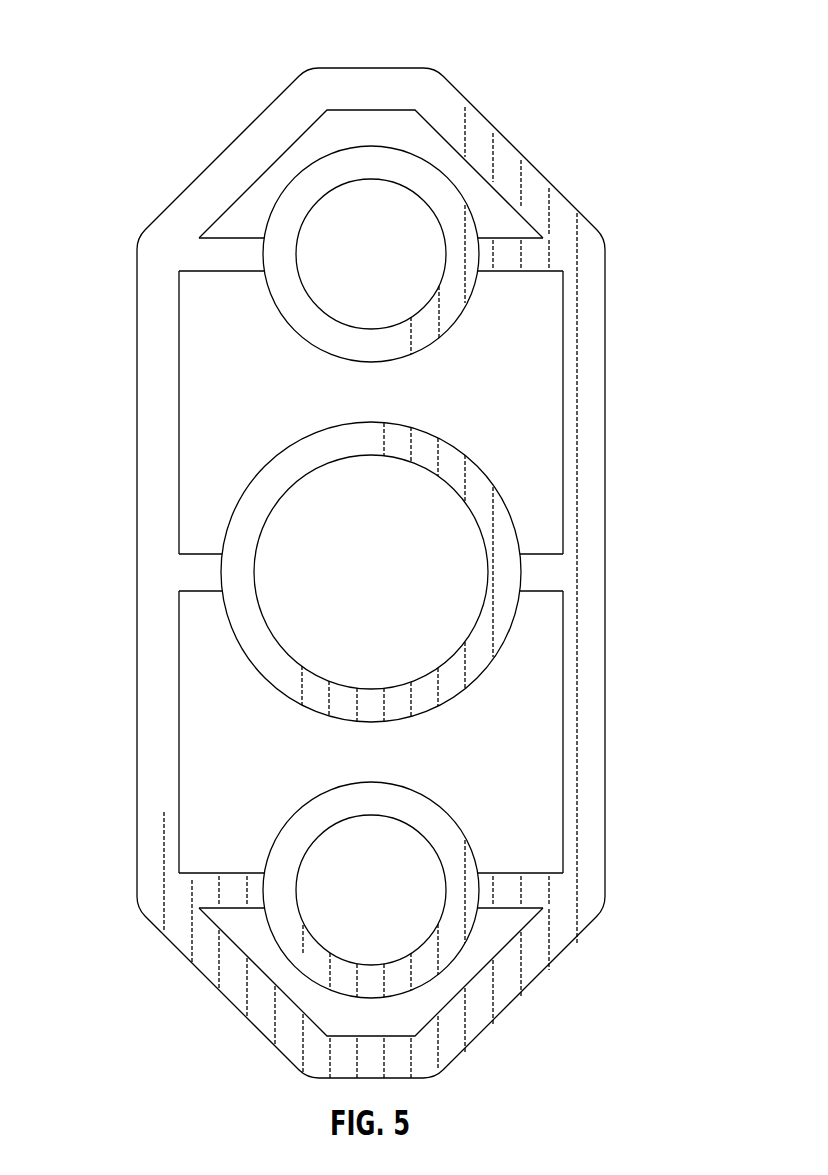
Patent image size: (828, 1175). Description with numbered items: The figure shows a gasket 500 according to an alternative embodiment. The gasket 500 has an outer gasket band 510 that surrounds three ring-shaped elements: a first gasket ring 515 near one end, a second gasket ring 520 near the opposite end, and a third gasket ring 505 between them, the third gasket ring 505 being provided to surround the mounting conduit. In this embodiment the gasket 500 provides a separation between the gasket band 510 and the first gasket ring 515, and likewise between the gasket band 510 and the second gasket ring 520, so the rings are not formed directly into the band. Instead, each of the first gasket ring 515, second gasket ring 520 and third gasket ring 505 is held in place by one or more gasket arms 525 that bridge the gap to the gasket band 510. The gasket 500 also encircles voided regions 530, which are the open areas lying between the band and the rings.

The gasket 500 is at (172, 42).
The third gasket ring 505 is at (493, 635).
The gasket band 510 is at (126, 724).
The first gasket ring 515 is at (312, 170).
The second gasket ring 520 is at (296, 960).
The gasket arms 525 is at (180, 250).
The voided regions 530 is at (462, 383).